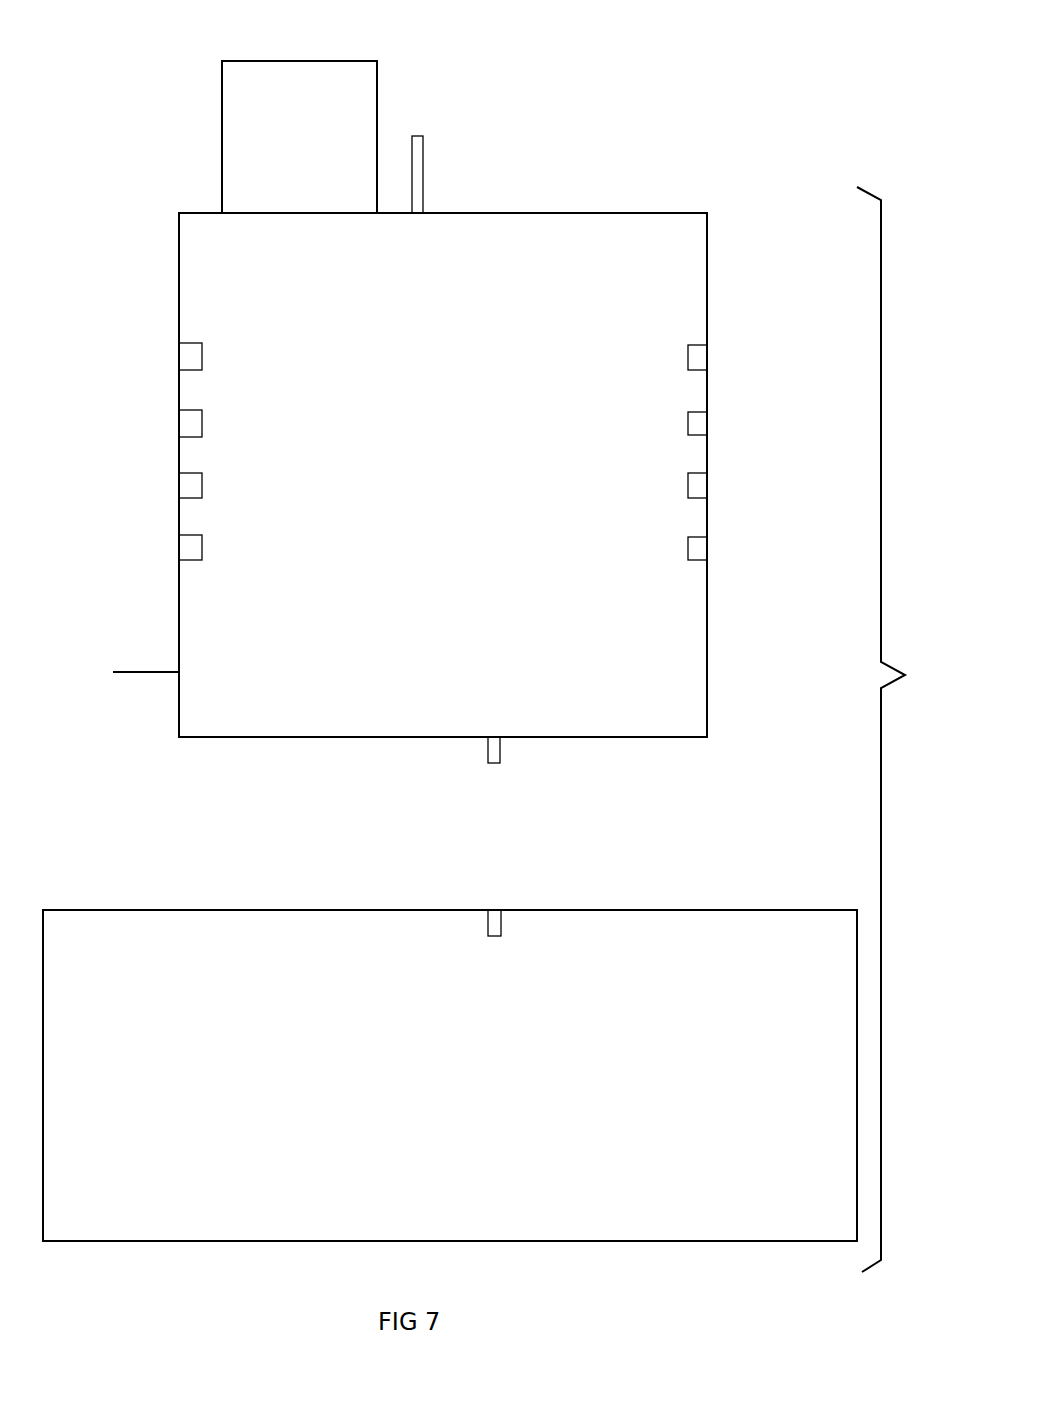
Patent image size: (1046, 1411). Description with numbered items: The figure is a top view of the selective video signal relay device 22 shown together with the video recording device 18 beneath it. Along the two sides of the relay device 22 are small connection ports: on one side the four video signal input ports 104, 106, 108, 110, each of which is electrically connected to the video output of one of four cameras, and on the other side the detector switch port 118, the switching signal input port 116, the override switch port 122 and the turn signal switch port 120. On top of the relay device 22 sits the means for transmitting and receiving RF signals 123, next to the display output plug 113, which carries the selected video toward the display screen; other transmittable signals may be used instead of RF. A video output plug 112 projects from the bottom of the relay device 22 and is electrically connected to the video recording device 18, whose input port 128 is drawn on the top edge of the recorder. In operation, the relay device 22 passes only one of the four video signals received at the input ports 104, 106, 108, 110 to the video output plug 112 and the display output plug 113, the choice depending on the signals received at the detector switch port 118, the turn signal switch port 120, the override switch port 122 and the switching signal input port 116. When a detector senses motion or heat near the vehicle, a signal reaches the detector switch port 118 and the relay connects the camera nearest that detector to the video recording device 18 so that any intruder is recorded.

The selective video signal relay device 22 is at (657, 128).
The means for transmitting and receiving RF signals 123 is at (252, 61).
The display output plug 113 is at (423, 136).
The detector switch port 118 is at (185, 362).
The switching signal input port 116 is at (188, 420).
The override switch port 122 is at (188, 490).
The turn signal switch port 120 is at (185, 547).
The video signal input port 104 is at (700, 357).
The video signal input port 106 is at (700, 420).
The video signal input port 108 is at (700, 485).
The video signal input port 110 is at (700, 545).
The video output plug 112 is at (486, 750).
The input port 128 is at (495, 912).
The video recording device 18 is at (368, 1262).